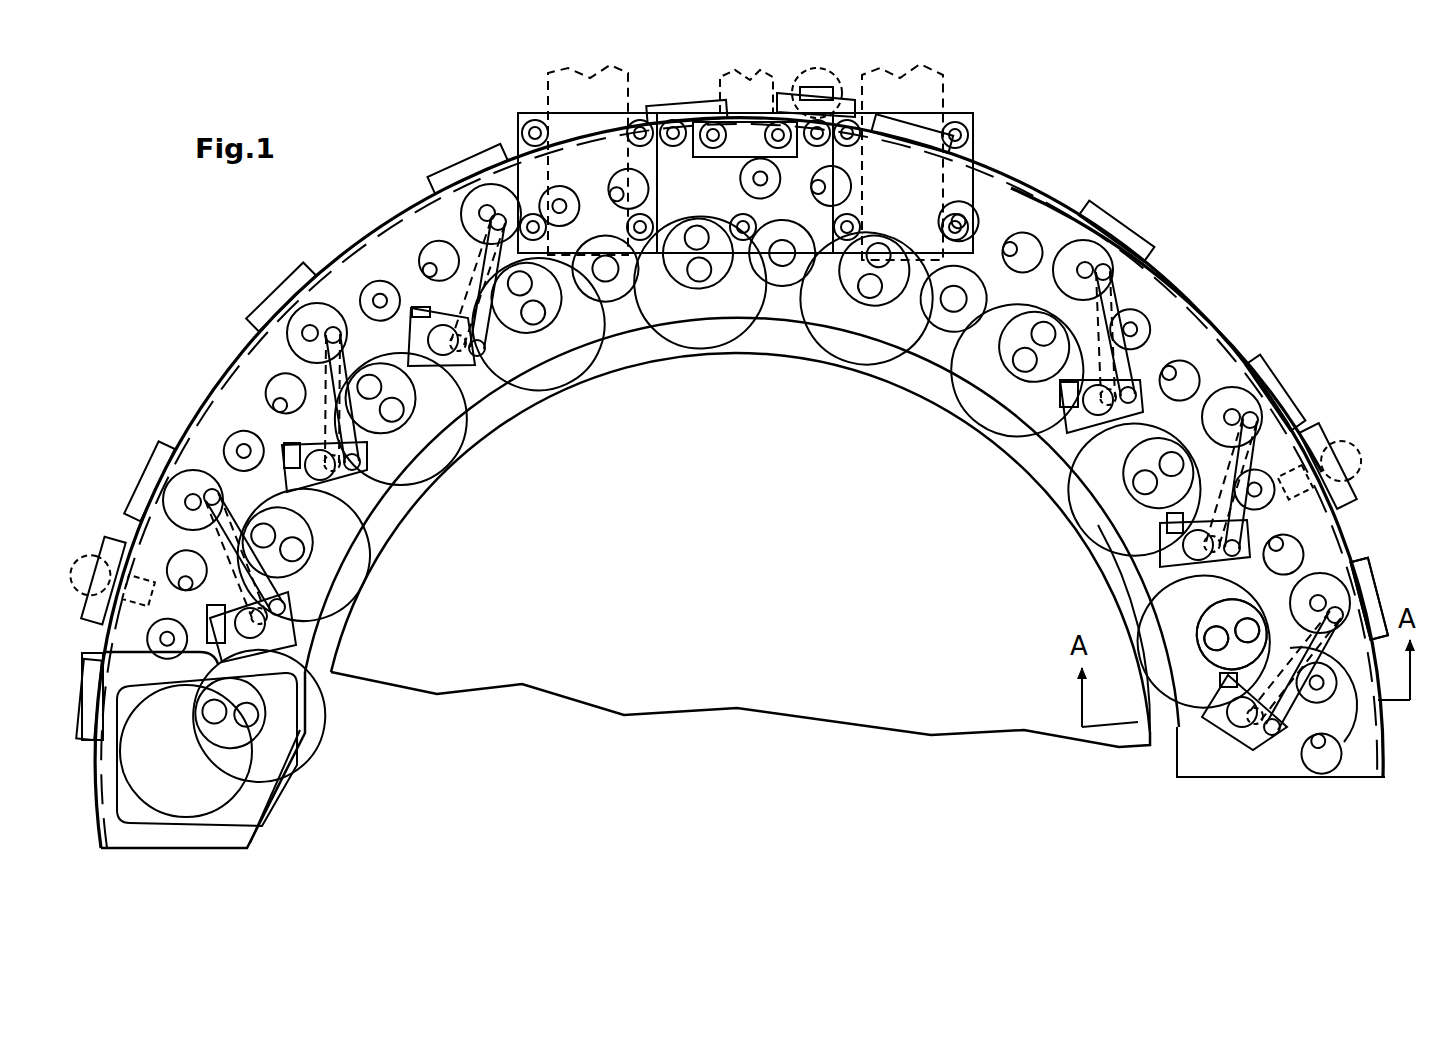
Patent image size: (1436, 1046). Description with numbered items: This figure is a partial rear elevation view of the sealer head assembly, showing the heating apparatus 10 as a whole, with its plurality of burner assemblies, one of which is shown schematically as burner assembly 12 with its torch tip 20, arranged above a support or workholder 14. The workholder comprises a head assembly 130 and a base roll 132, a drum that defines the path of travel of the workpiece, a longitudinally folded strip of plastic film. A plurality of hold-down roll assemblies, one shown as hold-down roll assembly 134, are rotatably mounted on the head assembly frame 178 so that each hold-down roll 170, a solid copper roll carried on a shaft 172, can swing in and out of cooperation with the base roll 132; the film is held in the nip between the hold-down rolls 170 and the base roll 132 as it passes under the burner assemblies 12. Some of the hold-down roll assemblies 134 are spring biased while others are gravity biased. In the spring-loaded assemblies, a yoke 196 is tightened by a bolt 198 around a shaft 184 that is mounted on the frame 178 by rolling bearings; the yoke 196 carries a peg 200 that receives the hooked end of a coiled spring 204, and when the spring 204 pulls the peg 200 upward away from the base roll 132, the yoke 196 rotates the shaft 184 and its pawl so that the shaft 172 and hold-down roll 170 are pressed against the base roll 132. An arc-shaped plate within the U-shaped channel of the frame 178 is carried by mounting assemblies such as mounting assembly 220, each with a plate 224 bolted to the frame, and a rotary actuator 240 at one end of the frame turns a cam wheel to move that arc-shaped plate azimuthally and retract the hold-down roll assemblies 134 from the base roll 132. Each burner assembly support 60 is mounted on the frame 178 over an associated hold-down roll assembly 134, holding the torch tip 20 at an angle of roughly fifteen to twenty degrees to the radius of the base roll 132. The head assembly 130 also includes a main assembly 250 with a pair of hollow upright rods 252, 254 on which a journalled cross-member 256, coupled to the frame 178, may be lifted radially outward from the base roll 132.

The heating apparatus 10 is at (203, 315).
The burner assembly 12 is at (1368, 538).
The support or workholder 14 is at (1164, 776).
The torch tip 20 is at (1342, 612).
The burner assembly support 60 is at (1362, 590).
The head assembly 130 is at (213, 408).
The base roll 132 is at (705, 638).
The hold-down roll assembly 134 is at (1138, 582).
The hold-down roll 170 is at (1153, 653).
The shaft 172 is at (1193, 636).
The head assembly frame 178 is at (1330, 408).
The shaft 184 is at (1222, 724).
The yoke 196 is at (1240, 716).
The bolt 198 is at (1220, 680).
The peg 200 is at (1253, 742).
The coiled spring 204 is at (1352, 727).
The mounting assembly 220 is at (1372, 478).
The plate 224 is at (1222, 335).
The rotary actuator 240 is at (253, 795).
The main assembly 250 is at (999, 147).
The hollow upright rod 252 is at (923, 93).
The hollow upright rod 254 is at (562, 93).
The journalled cross-member 256 is at (518, 128).